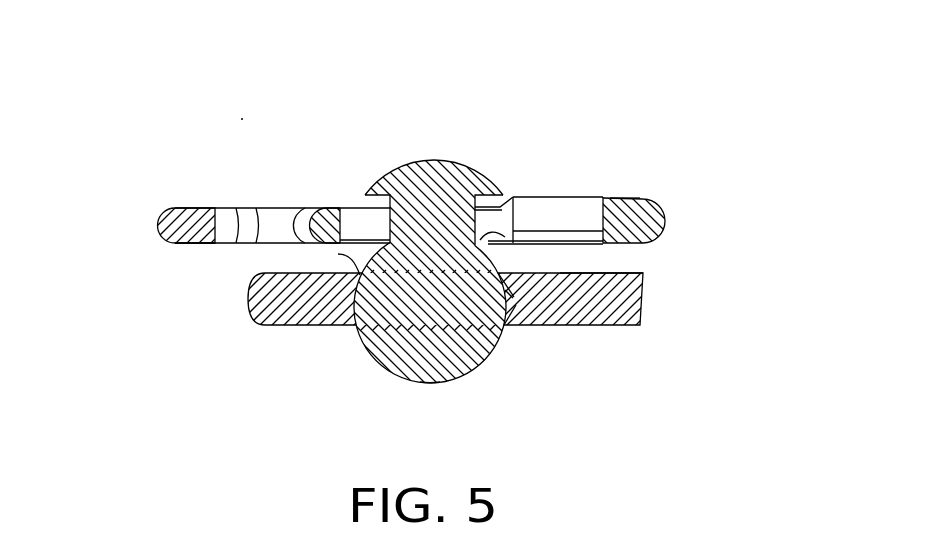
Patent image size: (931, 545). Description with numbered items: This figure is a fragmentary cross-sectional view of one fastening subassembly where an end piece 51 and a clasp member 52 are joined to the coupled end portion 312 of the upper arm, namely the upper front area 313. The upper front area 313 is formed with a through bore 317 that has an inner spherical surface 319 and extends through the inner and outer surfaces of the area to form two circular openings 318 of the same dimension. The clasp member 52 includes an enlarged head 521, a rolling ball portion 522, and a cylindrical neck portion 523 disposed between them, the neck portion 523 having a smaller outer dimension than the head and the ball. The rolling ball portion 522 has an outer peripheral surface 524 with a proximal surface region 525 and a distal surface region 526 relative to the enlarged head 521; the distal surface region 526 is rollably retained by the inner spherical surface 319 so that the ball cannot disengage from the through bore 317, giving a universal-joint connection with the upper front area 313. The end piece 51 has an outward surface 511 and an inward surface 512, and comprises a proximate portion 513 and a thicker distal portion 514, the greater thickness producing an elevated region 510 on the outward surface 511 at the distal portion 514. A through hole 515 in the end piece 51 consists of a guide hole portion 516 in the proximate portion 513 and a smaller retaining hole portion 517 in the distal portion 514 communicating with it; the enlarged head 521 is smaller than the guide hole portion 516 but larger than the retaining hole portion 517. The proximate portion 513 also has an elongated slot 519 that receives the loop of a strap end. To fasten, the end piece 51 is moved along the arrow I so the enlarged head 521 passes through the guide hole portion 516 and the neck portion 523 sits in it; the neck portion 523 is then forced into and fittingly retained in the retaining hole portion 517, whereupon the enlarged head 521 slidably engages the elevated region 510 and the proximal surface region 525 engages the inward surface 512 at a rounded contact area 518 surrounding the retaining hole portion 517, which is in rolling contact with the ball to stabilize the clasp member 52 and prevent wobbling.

The arrow I is at (242, 118).
The end piece 51 is at (321, 184).
The clasp member 52 is at (407, 140).
The elevated region 510 is at (618, 197).
The outward surface 511 is at (218, 208).
The inward surface 512 is at (218, 243).
The proximate portion 513 is at (322, 227).
The distal portion 514 is at (637, 207).
The through hole 515 is at (556, 198).
The guide hole portion 516 is at (357, 225).
The retaining hole portion 517 is at (577, 218).
The rounded contact area 518 is at (603, 243).
The elongated slot 519 is at (267, 216).
The enlarged head 521 is at (442, 177).
The rolling ball portion 522 is at (410, 337).
The neck portion 523 is at (478, 221).
The outer peripheral surface 524 is at (460, 376).
The proximal surface region 525 is at (505, 237).
The distal surface region 526 is at (513, 298).
The coupled end portion 312 is at (662, 304).
The upper front area 313 is at (620, 292).
The through bore 317 is at (518, 308).
The circular openings 318 is at (356, 325).
The inner spherical surface 319 is at (514, 297).